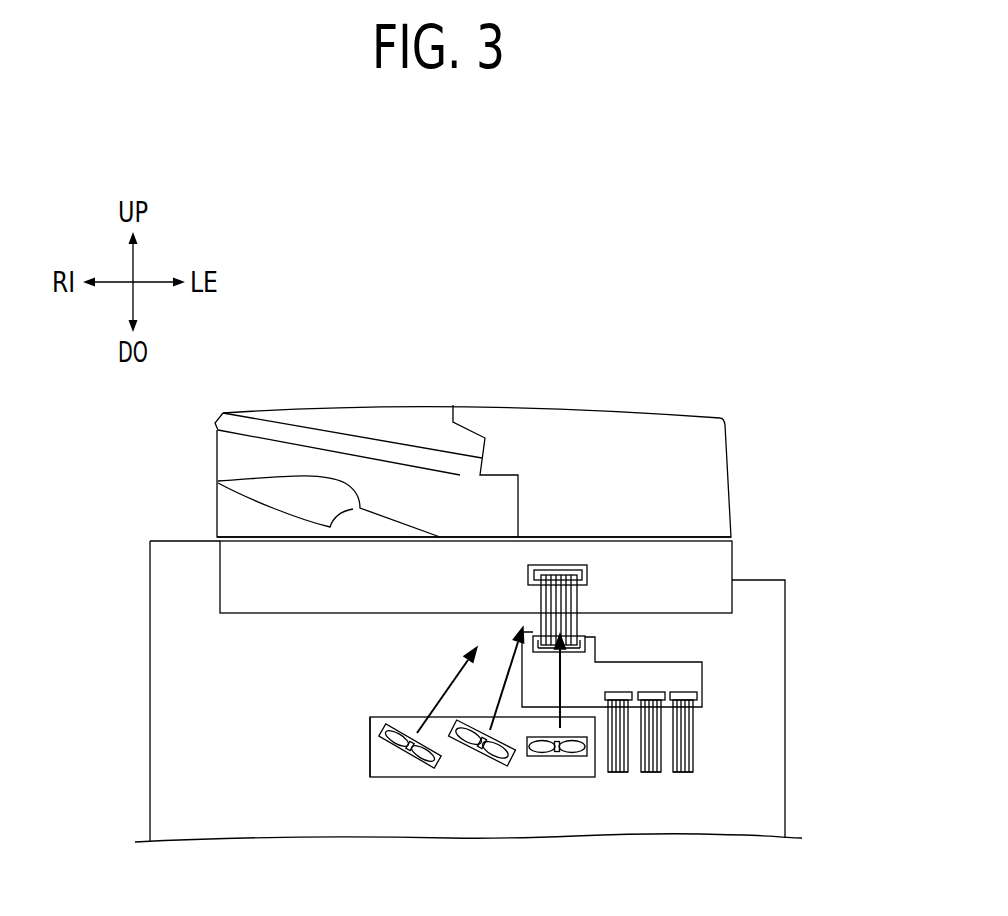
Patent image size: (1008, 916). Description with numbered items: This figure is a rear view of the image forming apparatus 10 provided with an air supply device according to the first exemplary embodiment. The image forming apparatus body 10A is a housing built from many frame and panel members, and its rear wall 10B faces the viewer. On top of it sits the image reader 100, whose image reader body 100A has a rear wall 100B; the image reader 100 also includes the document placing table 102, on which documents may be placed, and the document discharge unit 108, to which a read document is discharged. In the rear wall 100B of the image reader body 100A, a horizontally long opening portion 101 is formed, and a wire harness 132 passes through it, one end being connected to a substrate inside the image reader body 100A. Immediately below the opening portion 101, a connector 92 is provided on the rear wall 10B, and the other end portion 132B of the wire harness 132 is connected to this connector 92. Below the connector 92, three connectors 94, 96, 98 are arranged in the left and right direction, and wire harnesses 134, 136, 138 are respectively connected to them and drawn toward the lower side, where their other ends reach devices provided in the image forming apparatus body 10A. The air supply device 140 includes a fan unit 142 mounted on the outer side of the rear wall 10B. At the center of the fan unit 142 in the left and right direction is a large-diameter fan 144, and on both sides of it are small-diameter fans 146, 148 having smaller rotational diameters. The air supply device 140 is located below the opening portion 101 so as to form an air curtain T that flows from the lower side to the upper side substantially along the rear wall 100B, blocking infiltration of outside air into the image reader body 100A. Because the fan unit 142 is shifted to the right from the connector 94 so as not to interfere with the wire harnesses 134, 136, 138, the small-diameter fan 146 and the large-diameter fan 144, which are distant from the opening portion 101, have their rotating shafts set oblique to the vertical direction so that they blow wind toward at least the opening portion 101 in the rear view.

The image forming apparatus 10 is at (128, 572).
The image forming apparatus body 10A is at (785, 742).
The rear wall 10B is at (775, 788).
The image reader 100 is at (677, 413).
The image reader body 100A is at (732, 557).
The rear wall 100B is at (707, 557).
The opening portion 101 is at (533, 573).
The document placing table 102 is at (352, 438).
The document discharge unit 108 is at (218, 481).
The wire harness 132 is at (573, 598).
The other end portion 132B is at (588, 640).
The connector 92 is at (588, 652).
The connector 94 is at (614, 690).
The connector 96 is at (650, 690).
The connector 98 is at (683, 690).
The wire harness 134 is at (607, 770).
The wire harness 136 is at (660, 775).
The wire harness 138 is at (697, 770).
The air supply device 140 is at (367, 782).
The fan unit 142 is at (370, 742).
The large-diameter fan 144 is at (503, 757).
The small-diameter fan 146 is at (428, 762).
The small-diameter fan 148 is at (573, 753).
The air curtain T is at (443, 686).